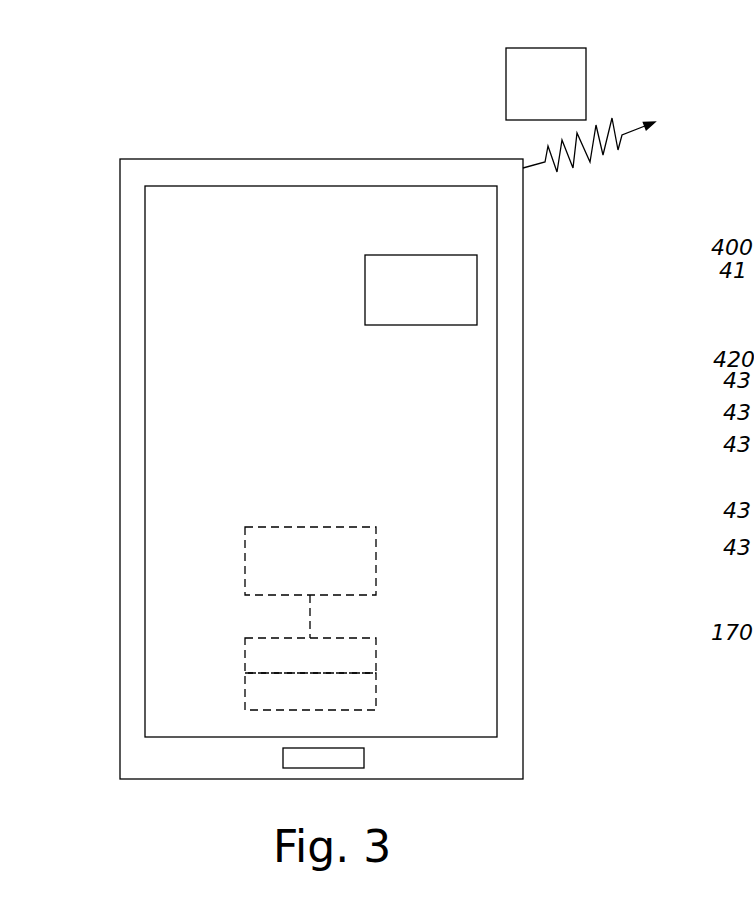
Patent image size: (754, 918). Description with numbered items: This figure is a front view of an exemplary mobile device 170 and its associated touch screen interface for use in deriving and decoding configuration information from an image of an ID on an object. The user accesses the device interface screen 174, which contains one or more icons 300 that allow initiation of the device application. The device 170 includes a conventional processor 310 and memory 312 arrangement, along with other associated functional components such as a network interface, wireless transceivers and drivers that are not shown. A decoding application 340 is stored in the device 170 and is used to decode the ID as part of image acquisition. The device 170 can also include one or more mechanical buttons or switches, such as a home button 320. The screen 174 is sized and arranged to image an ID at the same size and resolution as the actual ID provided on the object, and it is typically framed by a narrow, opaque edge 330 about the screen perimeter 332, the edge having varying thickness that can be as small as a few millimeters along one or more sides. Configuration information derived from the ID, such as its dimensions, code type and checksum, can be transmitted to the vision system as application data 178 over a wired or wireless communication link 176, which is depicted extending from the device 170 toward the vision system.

The mobile device 170 is at (340, 492).
The device interface screen 174 is at (483, 538).
The communication link 176 is at (598, 152).
The application data 178 is at (510, 83).
The icon 300 is at (460, 288).
The processor 310 is at (377, 557).
The memory 312 is at (362, 653).
The mechanical button 320 is at (368, 767).
The opaque edge 330 is at (135, 577).
The screen perimeter 332 is at (147, 442).
The decoding application 340 is at (248, 693).